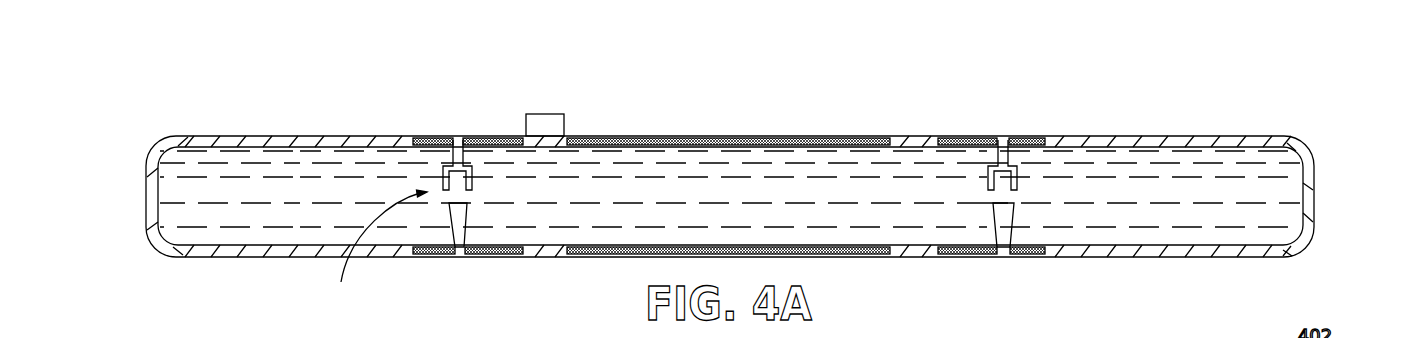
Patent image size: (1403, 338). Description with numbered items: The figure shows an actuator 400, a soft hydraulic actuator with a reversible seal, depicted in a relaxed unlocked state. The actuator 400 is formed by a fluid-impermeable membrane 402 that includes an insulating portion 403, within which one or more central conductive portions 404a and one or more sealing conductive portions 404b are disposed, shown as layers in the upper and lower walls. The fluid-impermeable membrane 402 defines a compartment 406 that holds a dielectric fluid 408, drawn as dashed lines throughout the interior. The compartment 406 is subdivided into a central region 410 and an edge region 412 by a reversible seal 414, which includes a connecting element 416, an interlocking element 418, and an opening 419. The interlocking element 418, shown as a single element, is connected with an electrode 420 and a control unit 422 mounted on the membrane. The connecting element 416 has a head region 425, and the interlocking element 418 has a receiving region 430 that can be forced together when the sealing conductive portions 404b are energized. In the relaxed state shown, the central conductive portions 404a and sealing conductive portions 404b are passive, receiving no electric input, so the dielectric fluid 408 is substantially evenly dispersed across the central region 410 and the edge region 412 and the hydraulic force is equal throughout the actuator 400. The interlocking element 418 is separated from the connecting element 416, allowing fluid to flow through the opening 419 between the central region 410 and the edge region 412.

The actuator 400 is at (995, 87).
The fluid-impermeable membrane 402 is at (1312, 163).
The insulating portion 403 is at (932, 254).
The central conductive portions 404a is at (777, 137).
The sealing conductive portions 404b is at (1033, 140).
The compartment 406 is at (323, 165).
The dielectric fluid 408 is at (1168, 172).
The central region 410 is at (694, 155).
The edge region 412 is at (248, 170).
The reversible seal 414 is at (370, 241).
The connecting element 416 is at (457, 233).
The interlocking element 418 is at (455, 145).
The opening 419 is at (453, 196).
The electrode 420 is at (526, 143).
The control unit 422 is at (553, 118).
The head region 425 is at (1008, 212).
The receiving region 430 is at (992, 177).